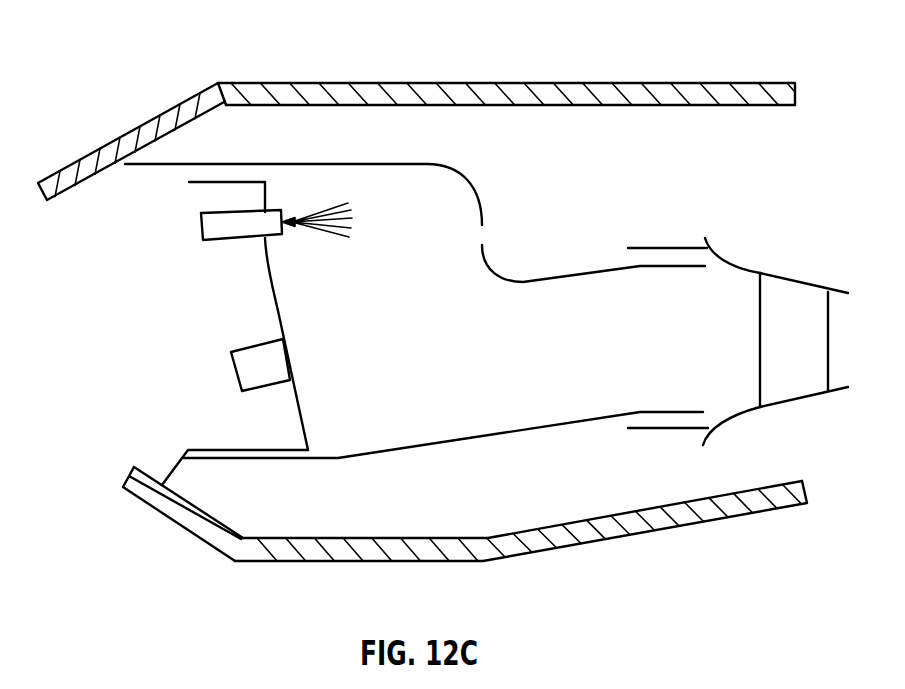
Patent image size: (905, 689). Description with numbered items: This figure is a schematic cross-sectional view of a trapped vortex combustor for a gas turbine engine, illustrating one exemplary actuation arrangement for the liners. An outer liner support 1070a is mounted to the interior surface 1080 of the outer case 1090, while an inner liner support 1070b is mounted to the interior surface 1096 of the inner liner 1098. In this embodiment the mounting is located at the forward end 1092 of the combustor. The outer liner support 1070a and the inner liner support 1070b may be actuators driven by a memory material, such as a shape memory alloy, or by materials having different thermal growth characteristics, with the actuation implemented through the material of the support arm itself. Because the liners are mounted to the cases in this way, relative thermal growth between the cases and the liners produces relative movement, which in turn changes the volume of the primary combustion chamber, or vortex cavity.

The outer liner support 1070a is at (178, 158).
The inner liner support 1070b is at (173, 468).
The interior surface of the outer case 1080 is at (230, 106).
The outer case 1090 is at (393, 83).
The forward end 1092 is at (97, 112).
The interior surface of the inner liner 1096 is at (292, 537).
The inner liner 1098 is at (483, 562).